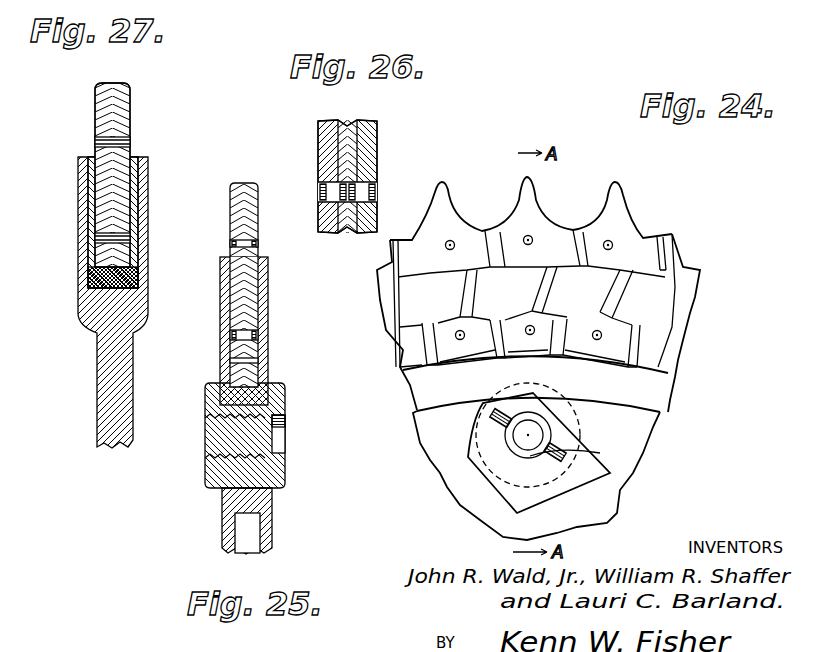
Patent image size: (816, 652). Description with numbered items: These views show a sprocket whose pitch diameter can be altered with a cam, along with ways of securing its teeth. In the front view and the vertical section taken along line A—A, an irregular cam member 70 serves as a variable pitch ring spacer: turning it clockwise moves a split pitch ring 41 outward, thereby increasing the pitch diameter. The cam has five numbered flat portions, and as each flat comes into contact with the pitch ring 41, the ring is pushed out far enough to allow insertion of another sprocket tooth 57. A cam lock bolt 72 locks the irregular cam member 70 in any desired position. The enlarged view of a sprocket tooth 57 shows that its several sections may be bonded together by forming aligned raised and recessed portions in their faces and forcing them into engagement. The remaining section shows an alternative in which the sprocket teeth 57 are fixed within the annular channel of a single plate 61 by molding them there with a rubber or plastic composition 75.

In FIG. 27, the sprocket tooth 57 is at (130, 81).
In FIG. 26, the sprocket tooth 57 is at (357, 117).
In FIG. 25, the sprocket tooth 57 is at (258, 177).
In FIG. 24, the sprocket tooth 57 is at (442, 185).
In FIG. 27, the single plate 61 is at (98, 375).
In FIG. 27, the rubber or plastic composition 75 is at (136, 286).
In FIG. 25, the split pitch ring 41 is at (253, 376).
In FIG. 24, the split pitch ring 41 is at (650, 390).
In FIG. 25, the irregular cam member 70 is at (205, 405).
In FIG. 24, the irregular cam member 70 is at (600, 453).
In FIG. 25, the cam lock bolt 72 is at (286, 422).
In FIG. 24, the cam lock bolt 72 is at (522, 437).